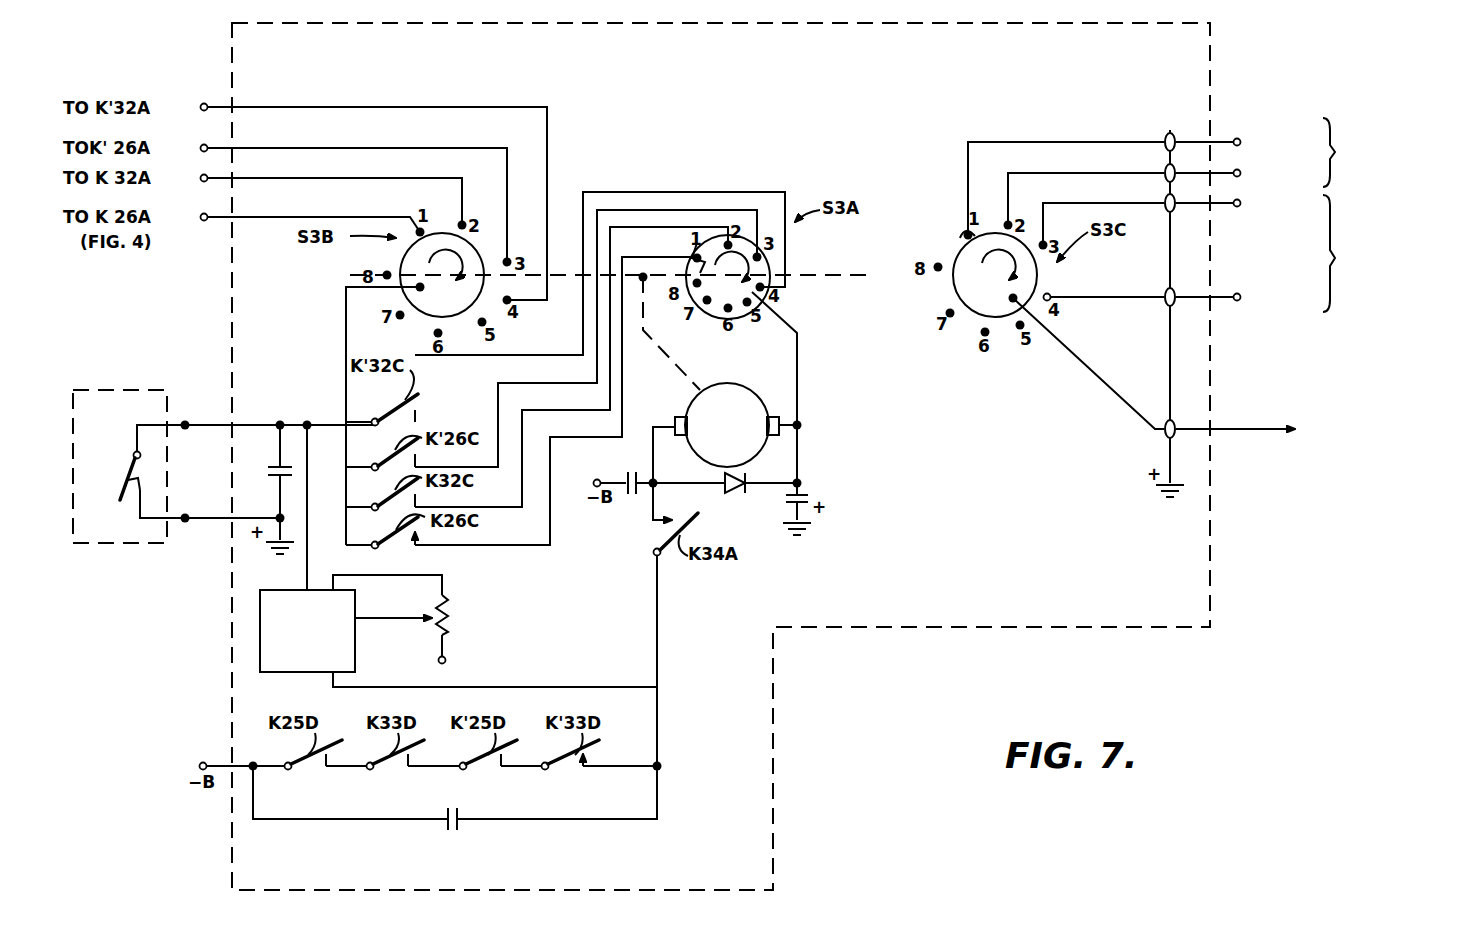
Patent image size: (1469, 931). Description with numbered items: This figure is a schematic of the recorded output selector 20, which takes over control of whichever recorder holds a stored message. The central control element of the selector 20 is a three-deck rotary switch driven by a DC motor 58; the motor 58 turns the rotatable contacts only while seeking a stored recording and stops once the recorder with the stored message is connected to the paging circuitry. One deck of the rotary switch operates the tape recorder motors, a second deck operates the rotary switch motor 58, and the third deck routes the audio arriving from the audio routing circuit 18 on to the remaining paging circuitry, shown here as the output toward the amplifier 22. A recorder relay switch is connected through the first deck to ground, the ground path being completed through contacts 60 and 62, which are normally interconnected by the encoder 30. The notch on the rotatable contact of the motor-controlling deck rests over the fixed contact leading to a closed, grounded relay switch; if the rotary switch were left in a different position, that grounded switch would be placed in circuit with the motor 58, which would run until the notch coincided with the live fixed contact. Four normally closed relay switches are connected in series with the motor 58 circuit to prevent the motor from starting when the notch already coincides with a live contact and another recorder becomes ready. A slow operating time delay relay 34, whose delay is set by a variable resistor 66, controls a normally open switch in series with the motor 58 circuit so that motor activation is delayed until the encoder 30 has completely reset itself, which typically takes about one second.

The recorded output selector 20 is at (908, 23).
The encoder 30 is at (190, 442).
The DC motor 58 is at (722, 385).
The contact 60 is at (185, 430).
The contact 62 is at (185, 523).
The variable resistor 66 is at (455, 607).
The time delay relay 34 is at (260, 645).
The amplifier 22 is at (1199, 384).
The audio routing circuit 18 is at (1341, 208).